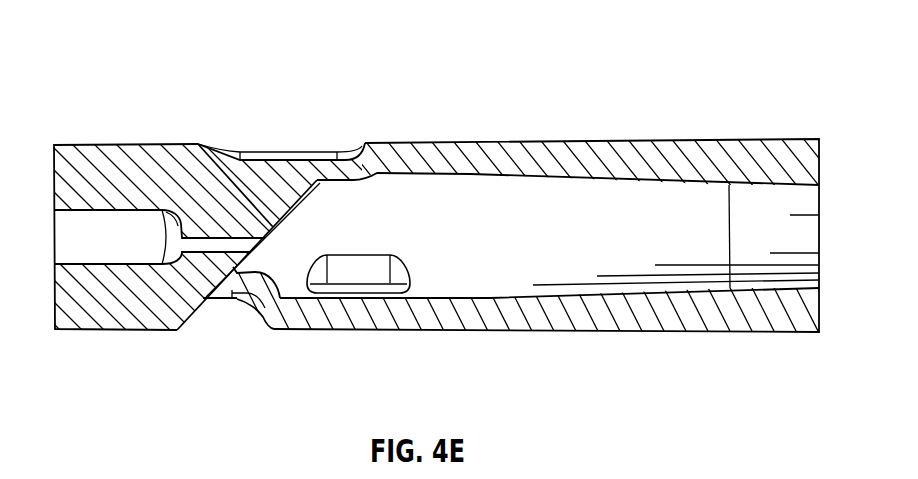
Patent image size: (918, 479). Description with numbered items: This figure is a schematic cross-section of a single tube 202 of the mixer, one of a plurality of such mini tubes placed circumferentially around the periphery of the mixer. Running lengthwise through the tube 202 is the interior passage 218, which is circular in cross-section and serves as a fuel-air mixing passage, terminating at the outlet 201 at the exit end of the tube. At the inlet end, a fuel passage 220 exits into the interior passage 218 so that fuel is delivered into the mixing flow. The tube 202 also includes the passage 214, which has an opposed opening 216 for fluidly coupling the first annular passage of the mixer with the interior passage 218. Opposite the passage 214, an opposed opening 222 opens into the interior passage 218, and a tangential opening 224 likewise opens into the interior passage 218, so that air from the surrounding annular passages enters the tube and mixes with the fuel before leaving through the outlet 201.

The tube 202 is at (147, 63).
The fuel passage 220 is at (132, 228).
The opening 222 is at (270, 168).
The interior passage 218 is at (542, 187).
The outlet 201 is at (768, 192).
The opening 224 is at (357, 267).
The passage 214 is at (235, 320).
The opening 216 is at (292, 308).